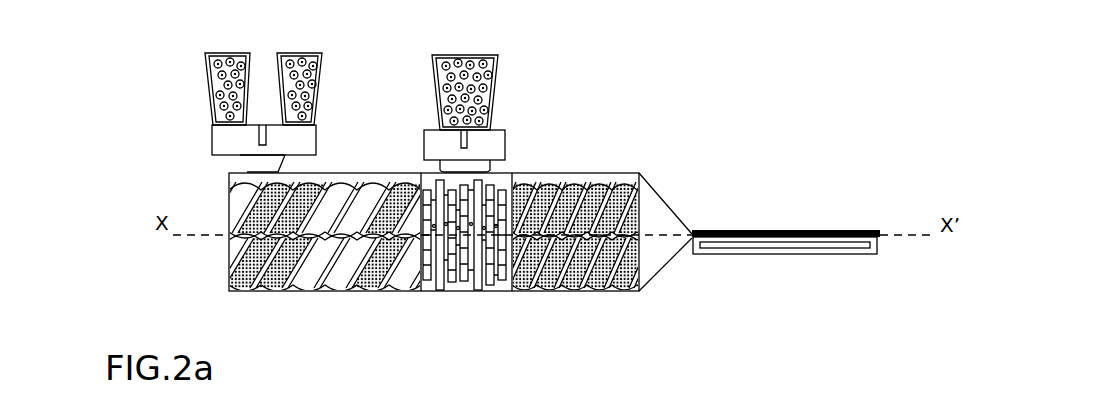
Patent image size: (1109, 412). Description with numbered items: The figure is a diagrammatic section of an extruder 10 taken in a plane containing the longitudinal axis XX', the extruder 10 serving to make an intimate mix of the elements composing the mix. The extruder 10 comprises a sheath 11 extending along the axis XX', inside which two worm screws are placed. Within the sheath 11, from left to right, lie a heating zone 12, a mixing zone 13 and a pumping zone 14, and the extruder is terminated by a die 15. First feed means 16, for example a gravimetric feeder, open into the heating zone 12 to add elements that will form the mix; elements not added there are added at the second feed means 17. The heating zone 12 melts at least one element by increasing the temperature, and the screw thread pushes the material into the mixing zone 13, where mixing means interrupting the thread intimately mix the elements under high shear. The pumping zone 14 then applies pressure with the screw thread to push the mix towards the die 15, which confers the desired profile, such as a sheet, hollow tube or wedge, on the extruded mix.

The extruder 10 is at (140, 128).
The sheath 11 is at (580, 172).
The heating zone 12 is at (229, 293).
The mixing zone 13 is at (421, 293).
The pumping zone 14 is at (512, 293).
The die 15 is at (661, 268).
The first feed means 16 is at (205, 85).
The second feed means 17 is at (432, 88).